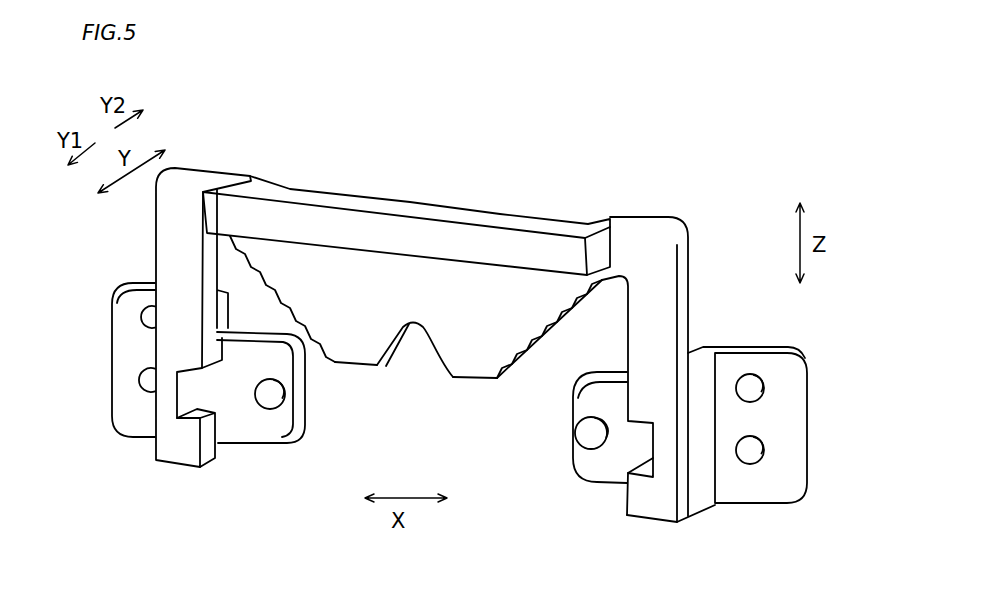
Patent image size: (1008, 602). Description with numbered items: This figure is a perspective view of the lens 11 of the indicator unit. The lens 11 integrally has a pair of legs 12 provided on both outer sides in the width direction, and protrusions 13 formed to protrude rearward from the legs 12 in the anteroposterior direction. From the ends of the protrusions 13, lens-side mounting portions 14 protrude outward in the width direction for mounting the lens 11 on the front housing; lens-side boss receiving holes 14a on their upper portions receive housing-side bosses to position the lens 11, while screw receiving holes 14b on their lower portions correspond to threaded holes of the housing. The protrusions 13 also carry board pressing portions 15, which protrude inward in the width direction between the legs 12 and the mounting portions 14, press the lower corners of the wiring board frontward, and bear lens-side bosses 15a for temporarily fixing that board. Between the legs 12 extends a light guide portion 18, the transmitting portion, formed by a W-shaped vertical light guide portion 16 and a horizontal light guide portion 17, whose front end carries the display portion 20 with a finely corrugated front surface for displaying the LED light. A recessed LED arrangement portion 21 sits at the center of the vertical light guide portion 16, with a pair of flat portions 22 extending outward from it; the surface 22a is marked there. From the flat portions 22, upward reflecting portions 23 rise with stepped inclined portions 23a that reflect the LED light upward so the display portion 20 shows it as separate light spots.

The lens 11 is at (637, 197).
The legs 12 is at (186, 275).
The protrusions 13 is at (703, 484).
The lens-side mounting portions 14 is at (126, 410).
The lens-side boss receiving holes 14a is at (147, 317).
The screw receiving holes 14b is at (147, 383).
The board pressing portions 15 is at (231, 423).
The lens-side bosses 15a is at (267, 406).
The vertical light guide portion 16 is at (473, 288).
The horizontal light guide portion 17 is at (527, 224).
The light guide portion 18 is at (548, 113).
The display portion 20 is at (407, 238).
The LED arrangement portion 21 is at (414, 323).
The flat portions 22 is at (355, 366).
The first serrated surface 22a is at (252, 285).
The upward reflecting portions 23 is at (280, 296).
The inclined portions 23a is at (582, 331).